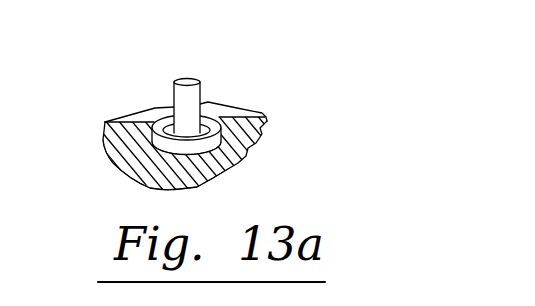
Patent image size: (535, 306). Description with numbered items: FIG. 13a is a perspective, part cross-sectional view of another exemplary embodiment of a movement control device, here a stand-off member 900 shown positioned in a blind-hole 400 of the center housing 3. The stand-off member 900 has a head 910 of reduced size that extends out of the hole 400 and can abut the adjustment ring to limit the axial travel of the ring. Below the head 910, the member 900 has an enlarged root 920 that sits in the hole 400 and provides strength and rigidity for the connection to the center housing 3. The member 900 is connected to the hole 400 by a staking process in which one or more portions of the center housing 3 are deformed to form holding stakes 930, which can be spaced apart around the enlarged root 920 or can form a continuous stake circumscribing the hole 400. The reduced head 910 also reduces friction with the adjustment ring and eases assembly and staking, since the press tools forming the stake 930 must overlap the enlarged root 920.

The center housing 3 is at (210, 151).
The blind-hole 400 is at (237, 137).
The stand-off member 900 is at (184, 87).
The head 910 is at (183, 98).
The enlarged root 920 is at (165, 150).
The holding stakes 930 is at (155, 131).